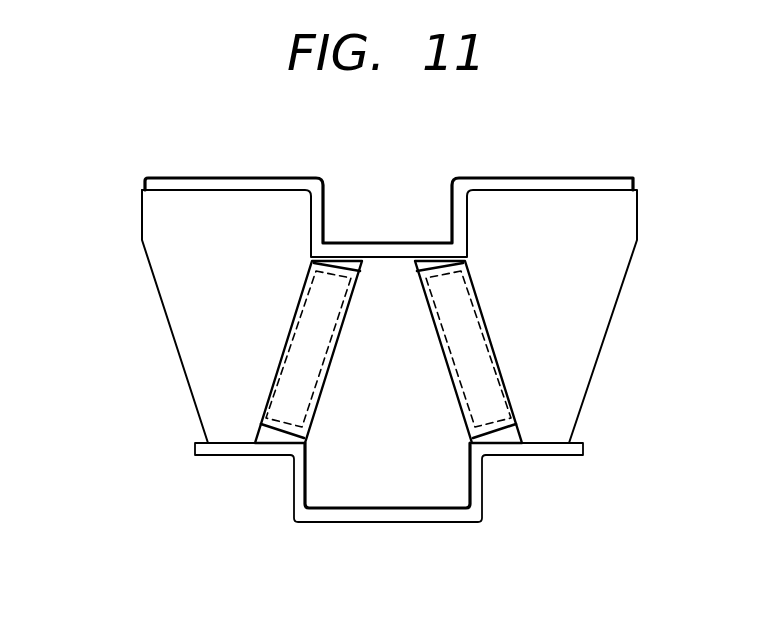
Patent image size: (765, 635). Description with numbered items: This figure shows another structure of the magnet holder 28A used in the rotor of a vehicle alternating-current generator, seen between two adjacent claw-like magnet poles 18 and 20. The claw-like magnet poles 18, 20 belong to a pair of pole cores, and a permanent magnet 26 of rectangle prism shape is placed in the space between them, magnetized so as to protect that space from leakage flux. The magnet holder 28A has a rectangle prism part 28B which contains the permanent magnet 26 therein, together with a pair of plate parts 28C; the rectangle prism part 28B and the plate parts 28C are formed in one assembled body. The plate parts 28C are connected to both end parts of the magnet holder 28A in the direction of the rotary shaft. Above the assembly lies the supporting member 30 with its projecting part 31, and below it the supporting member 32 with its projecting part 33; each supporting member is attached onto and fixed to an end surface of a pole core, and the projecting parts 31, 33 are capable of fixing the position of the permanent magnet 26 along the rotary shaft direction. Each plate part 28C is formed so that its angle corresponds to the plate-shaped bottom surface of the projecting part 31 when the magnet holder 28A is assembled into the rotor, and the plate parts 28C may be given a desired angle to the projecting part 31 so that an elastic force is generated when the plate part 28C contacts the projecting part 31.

The claw-like magnet pole 18 is at (180, 222).
The claw-like magnet pole 20 is at (428, 462).
The permanent magnet 26 is at (295, 372).
The magnet holder 28A is at (294, 395).
The rectangle prism part 28B is at (297, 312).
The plate part 28C is at (345, 262).
The supporting member 30 is at (512, 183).
The projecting part 31 is at (389, 250).
The supporting member 32 is at (372, 513).
The projecting part 33 is at (217, 452).